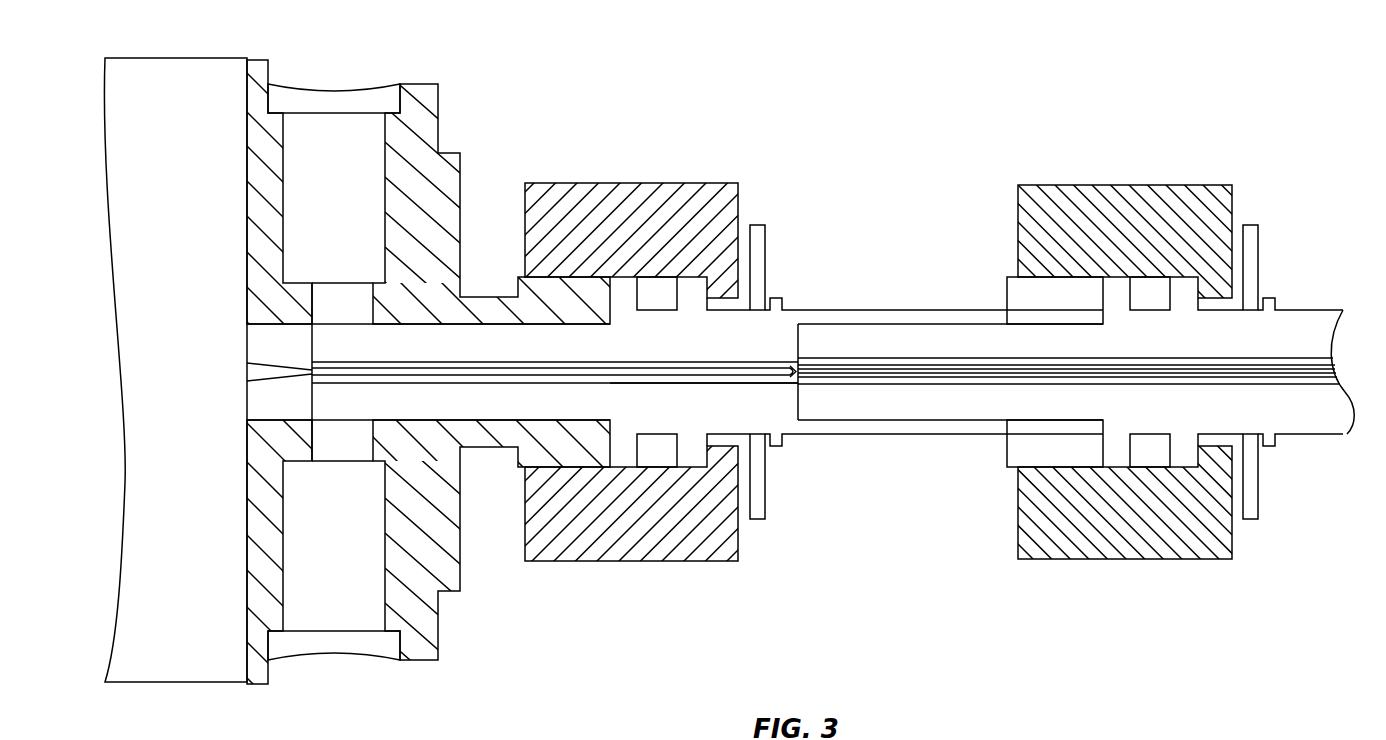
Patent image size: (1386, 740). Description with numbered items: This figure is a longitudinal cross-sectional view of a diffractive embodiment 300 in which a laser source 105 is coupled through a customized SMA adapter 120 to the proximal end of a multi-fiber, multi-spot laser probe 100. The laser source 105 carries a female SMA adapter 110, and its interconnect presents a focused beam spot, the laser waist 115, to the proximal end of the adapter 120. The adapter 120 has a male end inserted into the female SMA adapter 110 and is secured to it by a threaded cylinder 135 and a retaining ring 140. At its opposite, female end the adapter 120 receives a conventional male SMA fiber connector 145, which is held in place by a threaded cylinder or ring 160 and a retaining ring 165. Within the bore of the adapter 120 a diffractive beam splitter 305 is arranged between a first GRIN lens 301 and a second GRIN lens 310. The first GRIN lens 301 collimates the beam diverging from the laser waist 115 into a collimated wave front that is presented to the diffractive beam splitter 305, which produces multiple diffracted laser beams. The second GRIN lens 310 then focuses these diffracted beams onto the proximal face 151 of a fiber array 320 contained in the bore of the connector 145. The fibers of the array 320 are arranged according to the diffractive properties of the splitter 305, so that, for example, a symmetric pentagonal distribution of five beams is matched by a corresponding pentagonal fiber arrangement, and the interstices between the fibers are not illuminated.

The laser probe 100 is at (1296, 180).
The laser source 105 is at (194, 283).
The female SMA adapter 110 is at (424, 128).
The laser waist 115 is at (310, 376).
The customized SMA adapter 120 is at (689, 347).
The threaded cylinder 135 is at (616, 203).
The retaining ring 140 is at (756, 237).
The male SMA 905 fiber connector 145 is at (1296, 330).
The proximal face of fiber array 151 is at (798, 368).
The threaded cylinder or ring 160 is at (1148, 547).
The retaining ring 165 is at (1266, 501).
The fiber termination 300 is at (794, 578).
The first GRIN lens 301 is at (461, 358).
The diffractive beam splitter 305 is at (553, 385).
The second GRIN lens 310 is at (712, 388).
The fiber array 320 is at (942, 357).